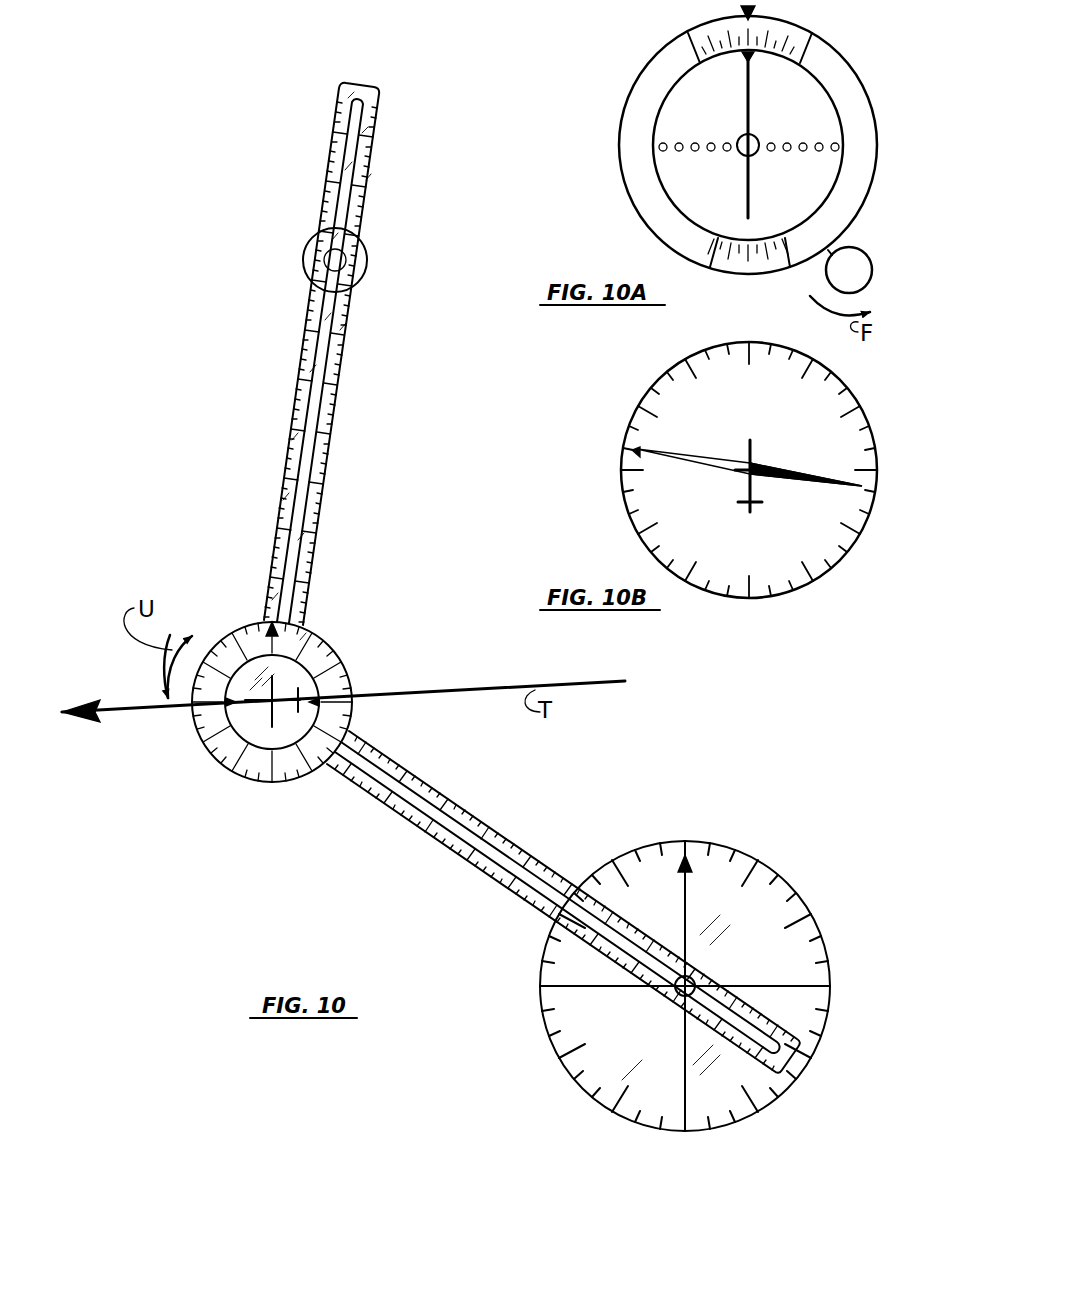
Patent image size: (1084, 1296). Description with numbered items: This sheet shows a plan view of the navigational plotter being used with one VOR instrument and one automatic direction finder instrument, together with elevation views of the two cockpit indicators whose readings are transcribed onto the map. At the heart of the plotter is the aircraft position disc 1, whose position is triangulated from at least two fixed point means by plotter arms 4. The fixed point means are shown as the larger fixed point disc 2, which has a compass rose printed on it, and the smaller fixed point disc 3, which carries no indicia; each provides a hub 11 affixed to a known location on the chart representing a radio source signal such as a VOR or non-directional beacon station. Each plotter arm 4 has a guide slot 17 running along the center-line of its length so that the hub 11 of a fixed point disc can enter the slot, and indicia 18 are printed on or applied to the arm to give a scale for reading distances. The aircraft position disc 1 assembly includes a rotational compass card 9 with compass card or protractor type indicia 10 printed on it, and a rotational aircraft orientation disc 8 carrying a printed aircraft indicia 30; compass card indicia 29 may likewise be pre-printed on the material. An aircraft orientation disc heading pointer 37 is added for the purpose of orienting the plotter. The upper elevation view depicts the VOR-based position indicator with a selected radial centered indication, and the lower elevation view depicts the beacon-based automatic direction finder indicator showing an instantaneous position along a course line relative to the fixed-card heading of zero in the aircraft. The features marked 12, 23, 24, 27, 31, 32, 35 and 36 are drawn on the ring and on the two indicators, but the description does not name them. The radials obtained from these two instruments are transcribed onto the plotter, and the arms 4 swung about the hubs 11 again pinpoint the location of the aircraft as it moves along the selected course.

In FIG. 10, the aircraft position disc 1 is at (262, 705).
In FIG. 10, the fixed point disc 2 is at (723, 840).
In FIG. 10, the fixed point disc 3 is at (364, 243).
In FIG. 10, the plotter arm 4 is at (343, 392).
In FIG. 10, the rotational aircraft orientation disc 8 is at (231, 752).
In FIG. 10, the rotational compass card 9 is at (348, 656).
In FIG. 10, the protractor type indicia 10 is at (620, 872).
In FIG. 10, the hub 11 is at (325, 248).
In FIG. 10, the ring edge 12 is at (355, 281).
In FIG. 10, the guide slot 17 is at (302, 440).
In FIG. 10, the indicia 18 is at (283, 530).
In FIG. 10A, the rotatable bezel 23 is at (752, 10).
In FIG. 10A, the pointer with dot scale 24 is at (748, 118).
In FIG. 10A, the adjustment knob 27 is at (852, 247).
In FIG. 10, the compass card indicia 29 is at (231, 641).
In FIG. 10, the aircraft indicia 30 is at (322, 640).
In FIG. 10B, the ADF dial 31 is at (669, 392).
In FIG. 10B, the needle tip 32 is at (786, 488).
In FIG. 10B, the ADF needle 35 is at (620, 455).
In FIG. 10B, the center marker 36 is at (748, 496).
In FIG. 10, the aircraft orientation disc heading pointer 37 is at (200, 731).